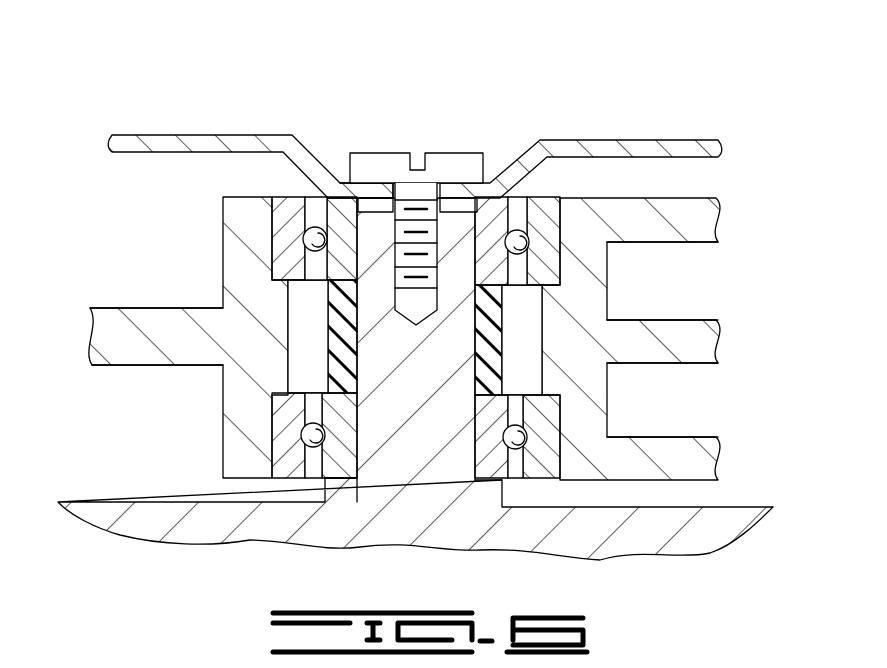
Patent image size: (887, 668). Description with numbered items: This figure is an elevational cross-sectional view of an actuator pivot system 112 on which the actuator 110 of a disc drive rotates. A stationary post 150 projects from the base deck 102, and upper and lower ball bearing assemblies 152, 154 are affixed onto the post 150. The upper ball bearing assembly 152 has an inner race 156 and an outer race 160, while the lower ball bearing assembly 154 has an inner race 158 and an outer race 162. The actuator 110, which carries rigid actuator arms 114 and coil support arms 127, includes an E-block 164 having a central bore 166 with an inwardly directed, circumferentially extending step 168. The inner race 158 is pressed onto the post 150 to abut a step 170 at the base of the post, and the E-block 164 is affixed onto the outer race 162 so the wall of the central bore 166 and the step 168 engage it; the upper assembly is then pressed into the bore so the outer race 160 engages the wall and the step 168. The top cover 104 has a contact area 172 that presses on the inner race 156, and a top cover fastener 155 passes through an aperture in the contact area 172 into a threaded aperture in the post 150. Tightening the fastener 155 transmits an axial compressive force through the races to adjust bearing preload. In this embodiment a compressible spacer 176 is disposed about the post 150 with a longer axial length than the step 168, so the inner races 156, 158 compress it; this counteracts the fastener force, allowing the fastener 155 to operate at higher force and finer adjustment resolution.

The base deck 102 is at (227, 530).
The top cover 104 is at (197, 132).
The actuator 110 is at (637, 196).
The actuator pivot system 112 is at (342, 88).
The actuator arms 114 is at (695, 221).
The coil support arms 127 is at (158, 313).
The stationary post 150 is at (414, 372).
The upper ball bearing assembly 152 is at (540, 196).
The lower ball bearing assembly 154 is at (536, 486).
The top cover fastener 155 is at (448, 152).
The inner race 156 is at (302, 195).
The inner race 158 is at (333, 407).
The outer race 160 is at (287, 245).
The outer race 162 is at (288, 449).
The E-block 164 is at (138, 355).
The central bore 166 is at (518, 364).
The step 168 is at (548, 323).
The step 170 is at (340, 492).
The contact area 172 is at (377, 193).
The compressible spacer 176 is at (503, 328).